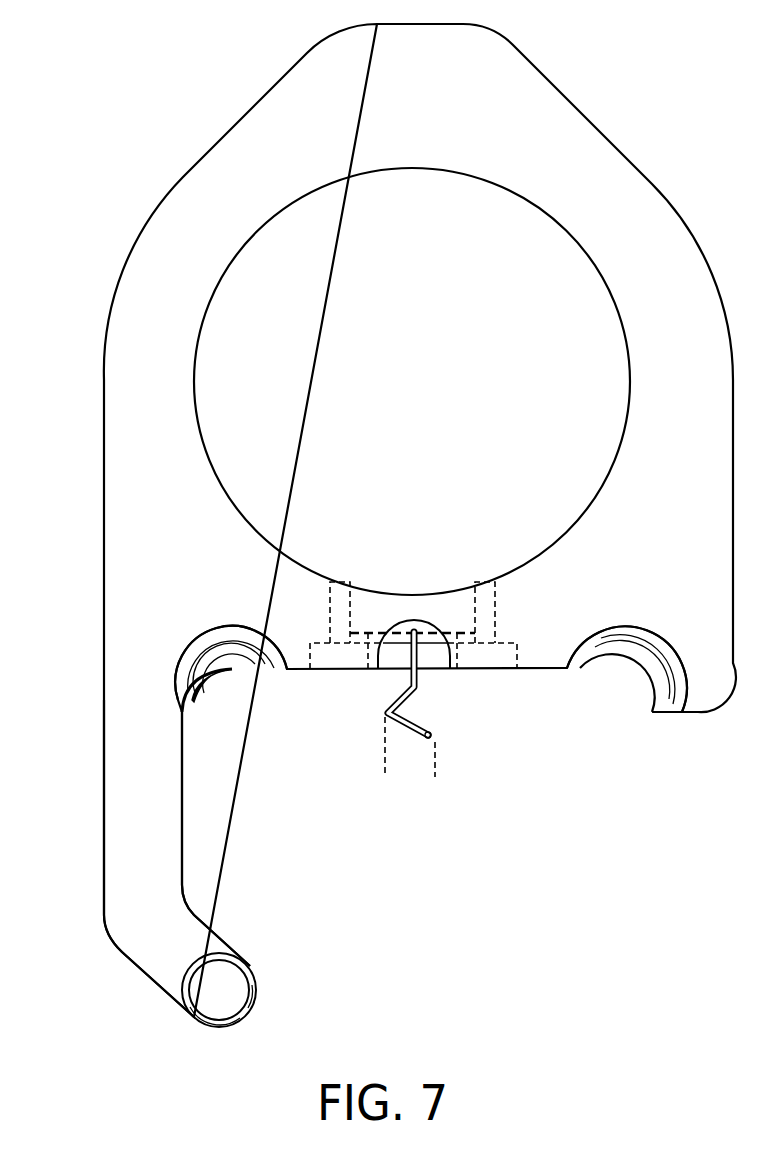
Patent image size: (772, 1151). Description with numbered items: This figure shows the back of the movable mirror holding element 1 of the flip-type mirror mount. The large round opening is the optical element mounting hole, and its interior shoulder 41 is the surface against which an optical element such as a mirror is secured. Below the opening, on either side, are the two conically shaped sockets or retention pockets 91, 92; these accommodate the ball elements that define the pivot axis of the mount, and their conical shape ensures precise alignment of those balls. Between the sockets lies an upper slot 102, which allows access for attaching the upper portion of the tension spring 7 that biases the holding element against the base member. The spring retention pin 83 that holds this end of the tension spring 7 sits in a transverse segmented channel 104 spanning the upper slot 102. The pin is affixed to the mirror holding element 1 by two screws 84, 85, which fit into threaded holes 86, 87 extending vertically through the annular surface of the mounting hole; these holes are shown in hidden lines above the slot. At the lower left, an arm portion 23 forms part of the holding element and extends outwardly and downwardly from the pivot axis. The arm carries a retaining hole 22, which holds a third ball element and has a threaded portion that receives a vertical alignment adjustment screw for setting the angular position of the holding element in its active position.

The movable mirror holding element 1 is at (607, 140).
The interior shoulder 41 is at (228, 262).
The arm portion 23 is at (115, 863).
The retaining hole 22 is at (193, 1013).
The conical socket or retention pocket 92 is at (238, 657).
The conical socket or retention pocket 91 is at (648, 660).
The threaded hole 87 is at (350, 605).
The threaded hole 86 is at (477, 607).
The screw 85 is at (353, 660).
The screw 84 is at (500, 660).
The upper slot 102 is at (428, 657).
The spring retention pin 83 is at (400, 642).
The transverse segmented channel 104 is at (370, 628).
The tension spring 7 is at (413, 737).